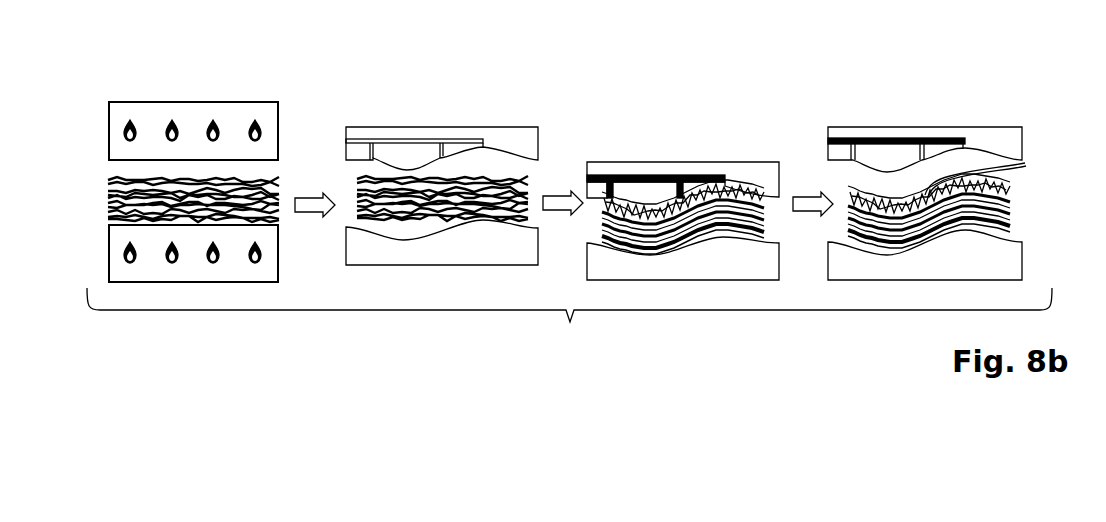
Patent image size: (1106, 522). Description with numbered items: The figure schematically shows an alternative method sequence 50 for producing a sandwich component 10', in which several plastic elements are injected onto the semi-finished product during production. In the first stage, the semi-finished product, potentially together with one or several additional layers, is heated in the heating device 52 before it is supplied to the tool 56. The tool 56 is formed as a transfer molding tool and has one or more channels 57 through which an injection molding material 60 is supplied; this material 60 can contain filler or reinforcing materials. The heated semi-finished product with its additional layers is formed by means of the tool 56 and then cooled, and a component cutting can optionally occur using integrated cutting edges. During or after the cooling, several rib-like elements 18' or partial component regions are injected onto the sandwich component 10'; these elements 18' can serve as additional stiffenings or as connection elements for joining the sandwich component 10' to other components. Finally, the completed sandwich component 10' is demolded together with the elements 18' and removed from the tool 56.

The heating device 52 is at (243, 91).
The tool 56 is at (492, 113).
The channel 57 is at (407, 138).
The injection molding material 60 is at (645, 175).
The rib-like elements 18' is at (998, 169).
The sandwich component 10' is at (958, 211).
The manufacturing process 50 is at (569, 331).